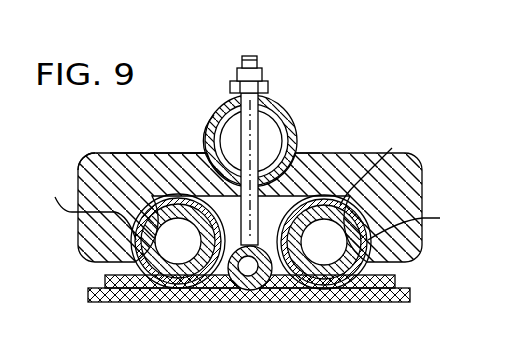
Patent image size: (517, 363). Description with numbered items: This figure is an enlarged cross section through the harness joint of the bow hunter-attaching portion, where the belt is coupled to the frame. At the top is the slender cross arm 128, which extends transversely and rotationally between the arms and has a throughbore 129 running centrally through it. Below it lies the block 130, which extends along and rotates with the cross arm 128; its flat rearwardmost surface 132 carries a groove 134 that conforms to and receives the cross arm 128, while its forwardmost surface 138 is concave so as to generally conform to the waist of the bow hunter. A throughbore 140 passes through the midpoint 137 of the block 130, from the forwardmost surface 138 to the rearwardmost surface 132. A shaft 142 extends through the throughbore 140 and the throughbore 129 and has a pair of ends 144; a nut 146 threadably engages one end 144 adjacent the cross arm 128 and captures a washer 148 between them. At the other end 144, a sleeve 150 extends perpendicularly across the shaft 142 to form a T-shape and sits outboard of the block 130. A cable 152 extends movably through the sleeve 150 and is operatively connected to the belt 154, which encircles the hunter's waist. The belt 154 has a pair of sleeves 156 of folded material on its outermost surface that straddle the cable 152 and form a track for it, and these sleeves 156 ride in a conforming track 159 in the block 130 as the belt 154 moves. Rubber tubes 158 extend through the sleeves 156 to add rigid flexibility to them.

The cross arm 128 is at (290, 125).
The throughbore 129 is at (268, 108).
The block 130 is at (408, 192).
The rearwardmost surface 132 is at (105, 152).
The groove 134 is at (222, 132).
The midpoint 137 is at (296, 153).
The forwardmost surface 138 is at (180, 154).
The throughbore 140 is at (212, 157).
The shaft 142 is at (279, 284).
The ends of the shaft 144 is at (249, 55).
The nut 146 is at (241, 66).
The washer 148 is at (277, 83).
The sleeve 150 is at (246, 290).
The cable 152 is at (262, 290).
The belt 154 is at (412, 300).
The sleeves 156 is at (249, 205).
The rubber tubes 158 is at (125, 254).
The track 159 is at (385, 166).